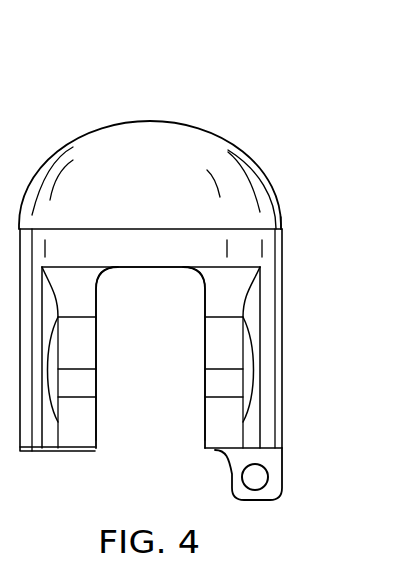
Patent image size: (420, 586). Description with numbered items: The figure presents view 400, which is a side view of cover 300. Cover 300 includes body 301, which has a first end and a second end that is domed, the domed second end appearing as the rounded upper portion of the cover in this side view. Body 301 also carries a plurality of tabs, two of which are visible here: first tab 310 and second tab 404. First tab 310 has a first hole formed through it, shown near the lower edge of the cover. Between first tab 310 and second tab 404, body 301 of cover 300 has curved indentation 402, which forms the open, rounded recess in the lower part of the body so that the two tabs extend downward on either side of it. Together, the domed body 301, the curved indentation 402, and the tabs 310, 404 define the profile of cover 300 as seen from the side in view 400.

The view 400 is at (186, 65).
The cover 300 is at (114, 107).
The body 301 is at (245, 122).
The curved indentation 402 is at (170, 357).
The second tab 404 is at (87, 385).
The first tab 310 is at (212, 431).